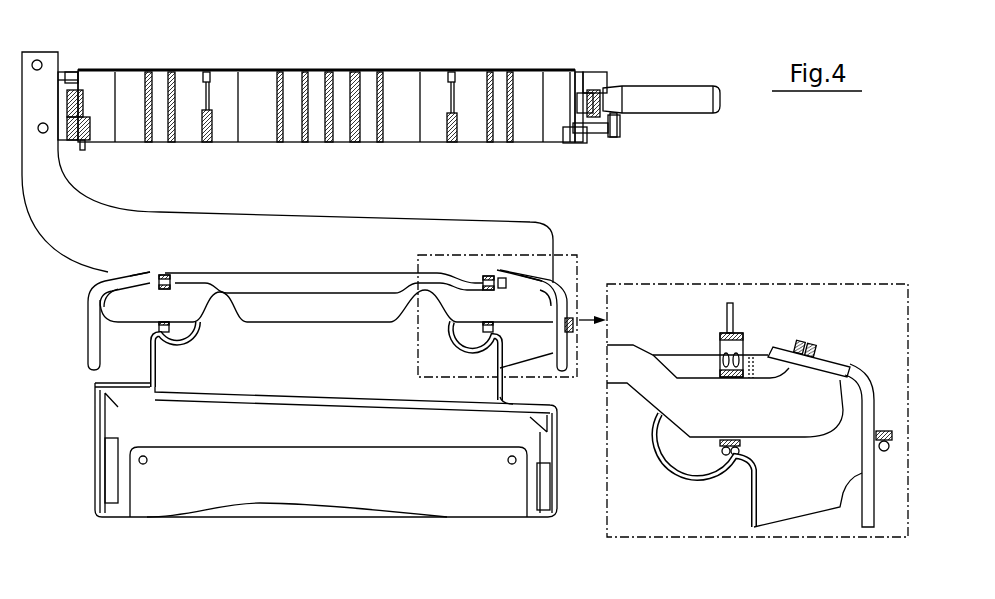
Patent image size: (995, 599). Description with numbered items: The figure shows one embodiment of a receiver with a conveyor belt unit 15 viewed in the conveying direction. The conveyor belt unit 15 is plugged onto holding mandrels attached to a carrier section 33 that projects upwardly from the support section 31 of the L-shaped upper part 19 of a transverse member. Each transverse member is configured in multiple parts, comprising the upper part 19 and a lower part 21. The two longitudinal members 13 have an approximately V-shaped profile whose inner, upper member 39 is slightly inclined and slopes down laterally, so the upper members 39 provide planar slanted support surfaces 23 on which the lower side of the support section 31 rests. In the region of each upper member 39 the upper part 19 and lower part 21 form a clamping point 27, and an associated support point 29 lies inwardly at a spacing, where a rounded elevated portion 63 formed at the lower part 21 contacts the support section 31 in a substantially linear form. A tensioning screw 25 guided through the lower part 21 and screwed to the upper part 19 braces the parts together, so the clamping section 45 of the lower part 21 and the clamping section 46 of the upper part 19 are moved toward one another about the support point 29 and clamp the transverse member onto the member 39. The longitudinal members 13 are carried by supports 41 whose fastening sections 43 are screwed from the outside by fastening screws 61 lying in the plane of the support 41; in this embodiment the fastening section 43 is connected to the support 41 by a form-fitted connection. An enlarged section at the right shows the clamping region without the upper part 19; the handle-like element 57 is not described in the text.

The longitudinal member 13 is at (78, 302).
The conveyor belt unit 15 is at (535, 57).
The upper part 19 is at (540, 235).
The lower part 21 is at (322, 305).
The support surface 23 is at (116, 278).
The tensioning screw 25 is at (163, 337).
The clamping point 27 is at (115, 265).
The support point 29 is at (218, 252).
The support section 31 is at (362, 240).
The carrier section 33 is at (45, 78).
The upper member 39 is at (143, 281).
The support 41 is at (277, 283).
The fastening section 43 is at (147, 358).
The clamping section 45 is at (138, 310).
The clamping section 46 is at (155, 240).
The handle 57 is at (672, 97).
The fastening screw 61 is at (800, 340).
The elevated portion 63 is at (220, 292).